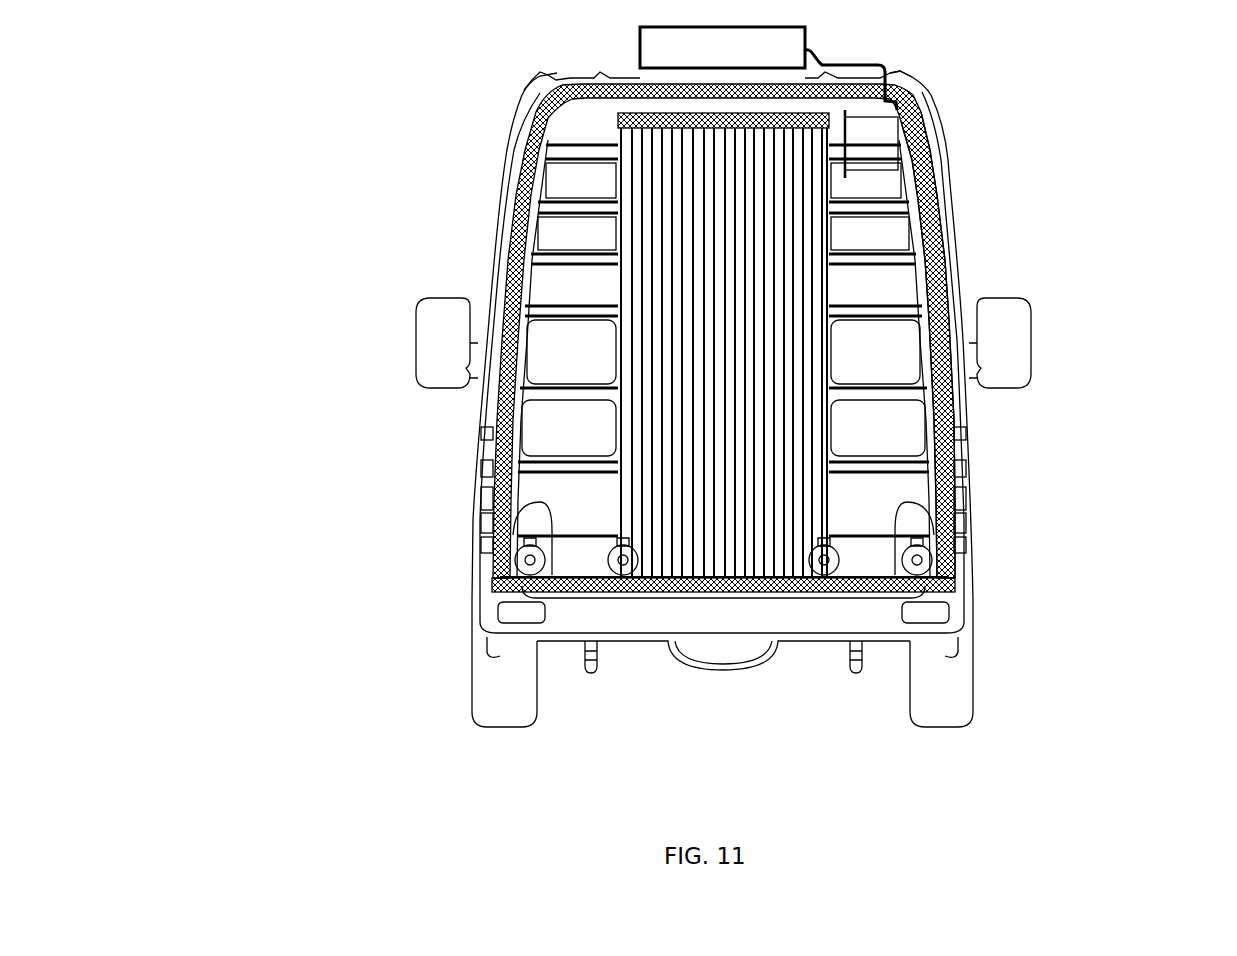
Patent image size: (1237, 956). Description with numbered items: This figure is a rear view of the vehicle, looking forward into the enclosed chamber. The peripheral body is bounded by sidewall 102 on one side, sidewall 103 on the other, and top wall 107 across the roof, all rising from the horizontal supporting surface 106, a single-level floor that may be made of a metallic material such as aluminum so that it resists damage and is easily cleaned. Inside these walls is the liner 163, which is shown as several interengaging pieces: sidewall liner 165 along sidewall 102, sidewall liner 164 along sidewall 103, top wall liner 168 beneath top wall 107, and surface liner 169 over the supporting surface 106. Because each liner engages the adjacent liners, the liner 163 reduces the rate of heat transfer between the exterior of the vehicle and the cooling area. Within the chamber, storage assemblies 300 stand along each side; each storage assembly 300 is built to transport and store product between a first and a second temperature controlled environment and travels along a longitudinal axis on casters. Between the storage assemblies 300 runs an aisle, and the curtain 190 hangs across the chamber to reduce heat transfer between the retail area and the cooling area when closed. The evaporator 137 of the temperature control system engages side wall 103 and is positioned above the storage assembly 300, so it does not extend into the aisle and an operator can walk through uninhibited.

The sidewall 102 is at (500, 276).
The sidewall 103 is at (950, 262).
The horizontal supporting surface 106 is at (700, 591).
The top wall 107 is at (625, 80).
The evaporator 137 is at (880, 143).
The liner 163 is at (496, 442).
The sidewall liner 164 is at (935, 287).
The sidewall liner 165 is at (500, 233).
The top wall liner 168 is at (870, 88).
The surface liner 169 is at (895, 581).
The curtain 190 is at (684, 212).
The storage assembly 300 is at (508, 393).